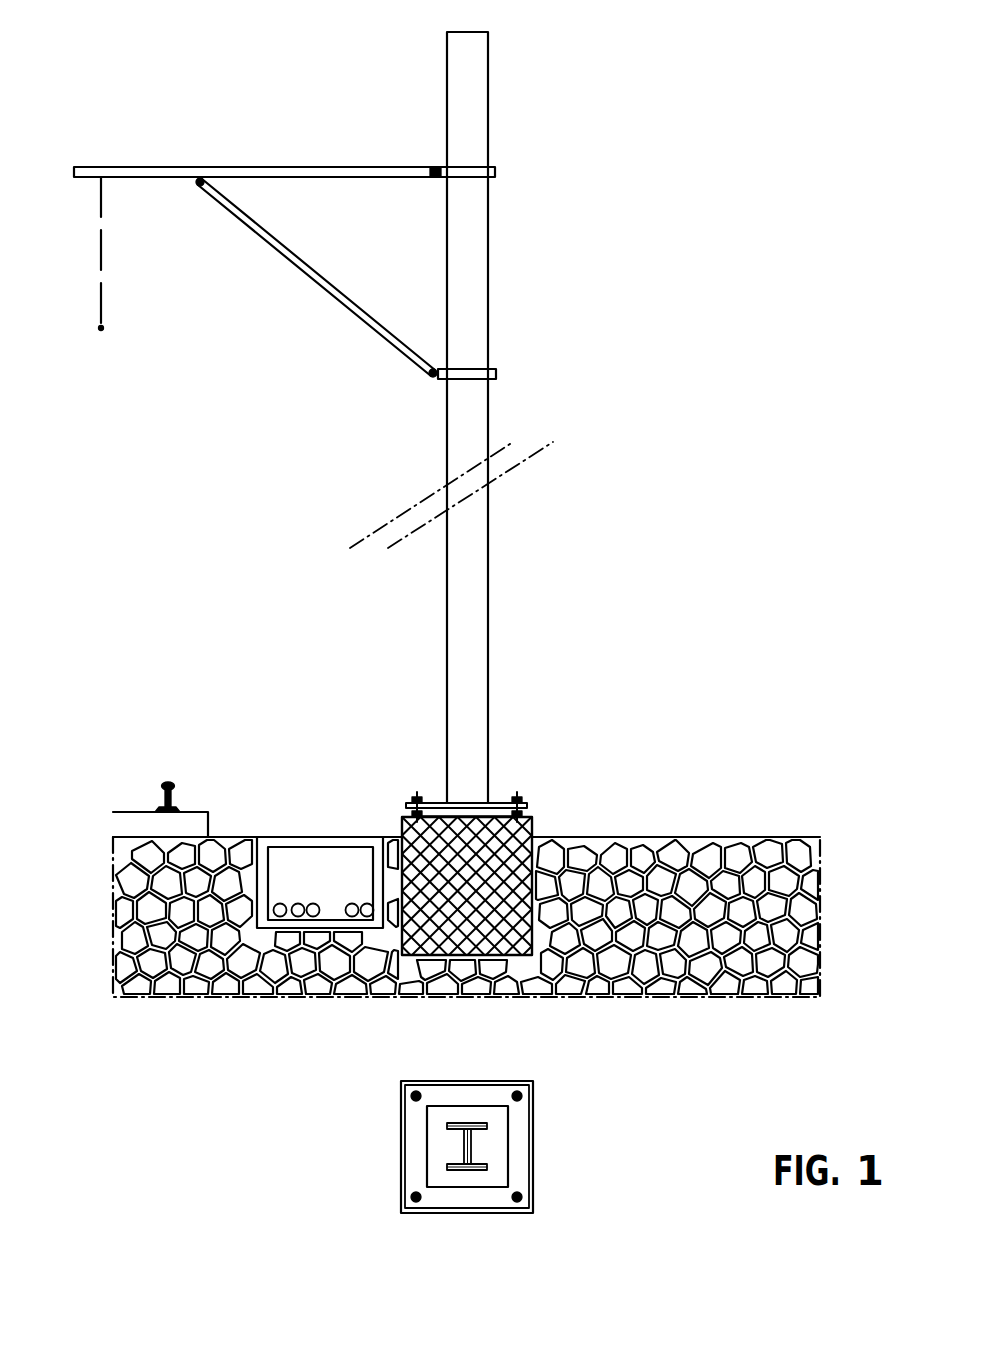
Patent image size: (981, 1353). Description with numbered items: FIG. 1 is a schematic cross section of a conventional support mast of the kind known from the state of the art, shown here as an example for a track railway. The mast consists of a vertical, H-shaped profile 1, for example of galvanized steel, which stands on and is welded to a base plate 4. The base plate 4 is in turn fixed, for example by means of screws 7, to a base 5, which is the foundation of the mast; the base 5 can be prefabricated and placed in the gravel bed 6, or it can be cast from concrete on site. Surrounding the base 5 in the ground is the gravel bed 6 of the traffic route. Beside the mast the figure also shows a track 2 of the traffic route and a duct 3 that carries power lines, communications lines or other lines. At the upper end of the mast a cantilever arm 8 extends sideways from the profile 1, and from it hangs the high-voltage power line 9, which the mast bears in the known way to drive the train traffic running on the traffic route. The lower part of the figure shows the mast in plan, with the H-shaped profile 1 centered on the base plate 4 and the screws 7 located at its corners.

The H-shaped profile 1 is at (478, 82).
The track 2 is at (168, 783).
The duct 3 is at (305, 853).
The base plate 4 is at (505, 803).
The base 5 is at (517, 838).
The gravel bed 6 is at (697, 862).
The anchor bolts 7 is at (410, 806).
The cantilever arm and brace 8 is at (225, 190).
The high-voltage power line 9 is at (101, 328).